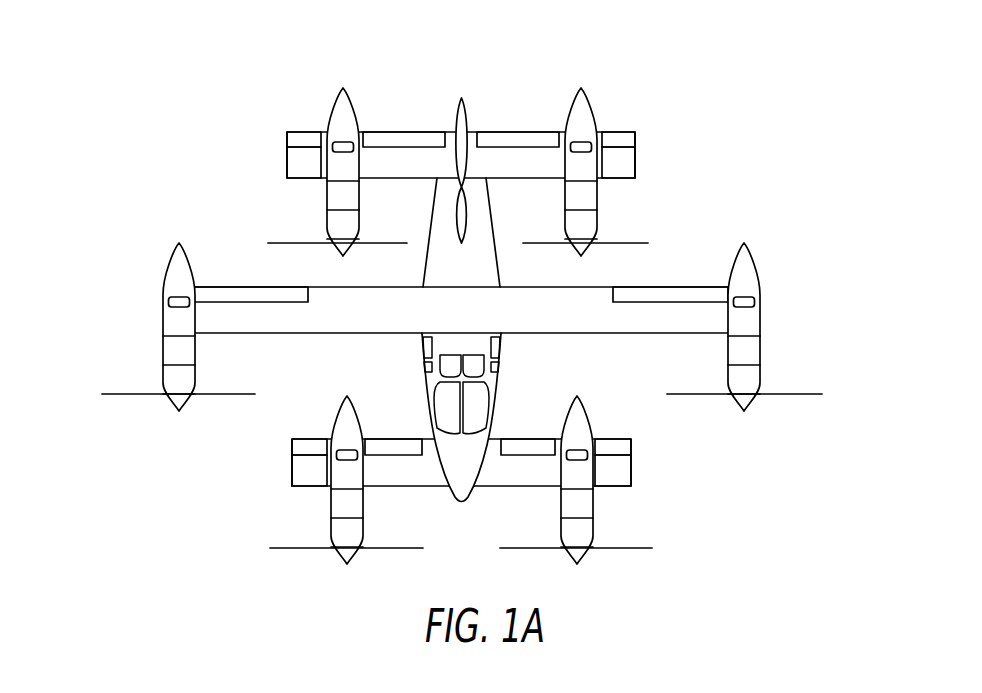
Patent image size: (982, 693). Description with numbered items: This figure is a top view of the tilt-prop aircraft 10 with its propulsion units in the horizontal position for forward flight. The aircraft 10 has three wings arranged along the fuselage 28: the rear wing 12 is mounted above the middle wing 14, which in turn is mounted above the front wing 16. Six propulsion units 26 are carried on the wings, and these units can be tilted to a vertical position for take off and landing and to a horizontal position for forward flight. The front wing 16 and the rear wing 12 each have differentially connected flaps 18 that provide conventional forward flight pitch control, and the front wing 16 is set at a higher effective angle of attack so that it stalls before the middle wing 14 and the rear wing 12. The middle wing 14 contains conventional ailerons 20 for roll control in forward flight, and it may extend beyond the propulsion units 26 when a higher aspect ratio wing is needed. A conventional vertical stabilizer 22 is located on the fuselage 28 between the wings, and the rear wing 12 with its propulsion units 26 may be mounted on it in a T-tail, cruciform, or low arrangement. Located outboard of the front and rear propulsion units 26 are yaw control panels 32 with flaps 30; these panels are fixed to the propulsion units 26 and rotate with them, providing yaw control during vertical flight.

The aircraft 10 is at (452, 300).
The rear wing 12 is at (402, 162).
The middle wing 14 is at (380, 310).
The front wing 16 is at (527, 470).
The flaps 18 is at (405, 140).
The ailerons 20 is at (227, 296).
The vertical stabilizer 22 is at (460, 220).
The propulsion units 26 is at (342, 115).
The fuselage 28 is at (425, 248).
The flaps 30 is at (296, 140).
The yaw control panels 32 is at (302, 162).